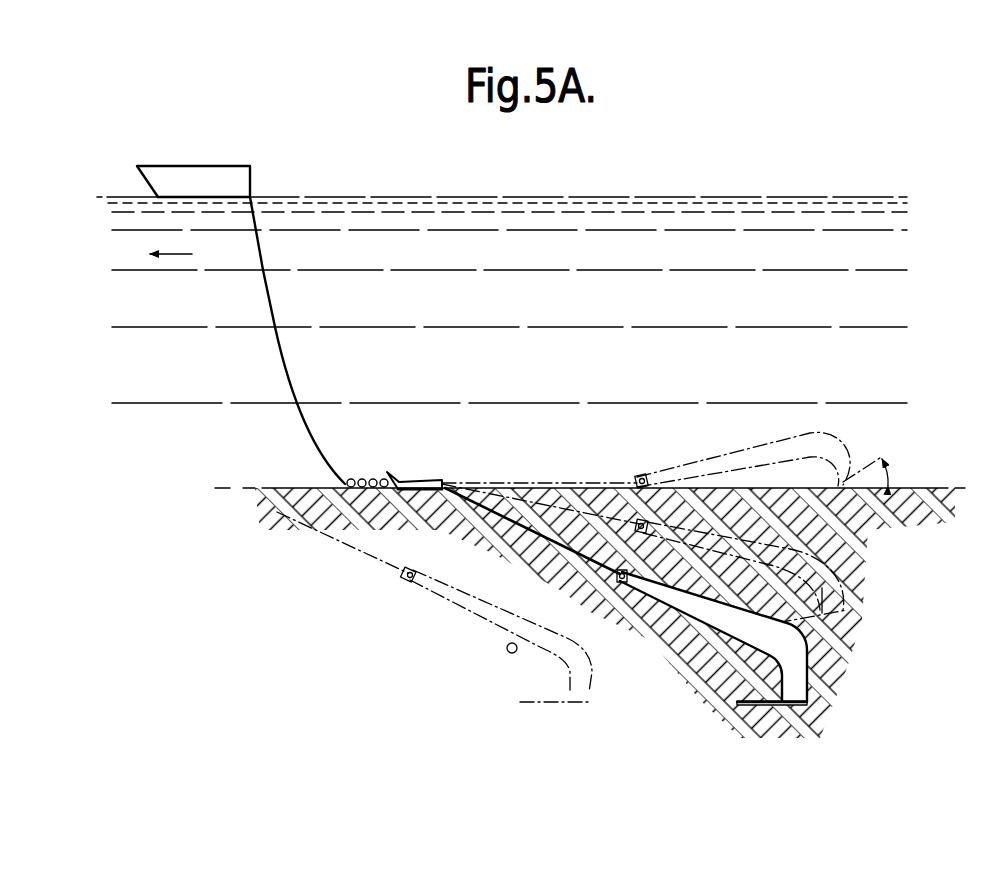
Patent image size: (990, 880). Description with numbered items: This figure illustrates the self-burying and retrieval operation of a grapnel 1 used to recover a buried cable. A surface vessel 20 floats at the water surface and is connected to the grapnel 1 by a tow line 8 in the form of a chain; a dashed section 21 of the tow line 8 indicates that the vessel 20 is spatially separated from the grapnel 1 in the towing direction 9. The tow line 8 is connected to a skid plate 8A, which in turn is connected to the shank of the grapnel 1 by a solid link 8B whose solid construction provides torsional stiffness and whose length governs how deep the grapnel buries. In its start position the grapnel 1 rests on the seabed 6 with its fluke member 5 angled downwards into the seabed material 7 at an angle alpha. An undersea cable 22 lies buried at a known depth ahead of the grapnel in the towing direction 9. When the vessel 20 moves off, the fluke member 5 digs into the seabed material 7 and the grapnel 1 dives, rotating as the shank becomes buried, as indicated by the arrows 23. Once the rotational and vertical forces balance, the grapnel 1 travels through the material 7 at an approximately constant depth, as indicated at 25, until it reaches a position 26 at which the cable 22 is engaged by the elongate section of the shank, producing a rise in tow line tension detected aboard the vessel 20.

The surface vessel 20 is at (190, 168).
The towing direction 9 is at (177, 256).
The tow line 8 is at (289, 365).
The dashed section of the tow line 21 is at (360, 478).
The skid plate 8A is at (418, 480).
The solid link 8B is at (521, 481).
The grapnel 1 is at (775, 442).
The fluke member 5 is at (823, 500).
The seabed 6 is at (935, 487).
The seabed material 7 is at (892, 608).
The arrows 23 is at (850, 520).
The constant depth position 25 is at (808, 681).
The undersea cable 22 is at (505, 650).
The engagement position 26 is at (594, 670).